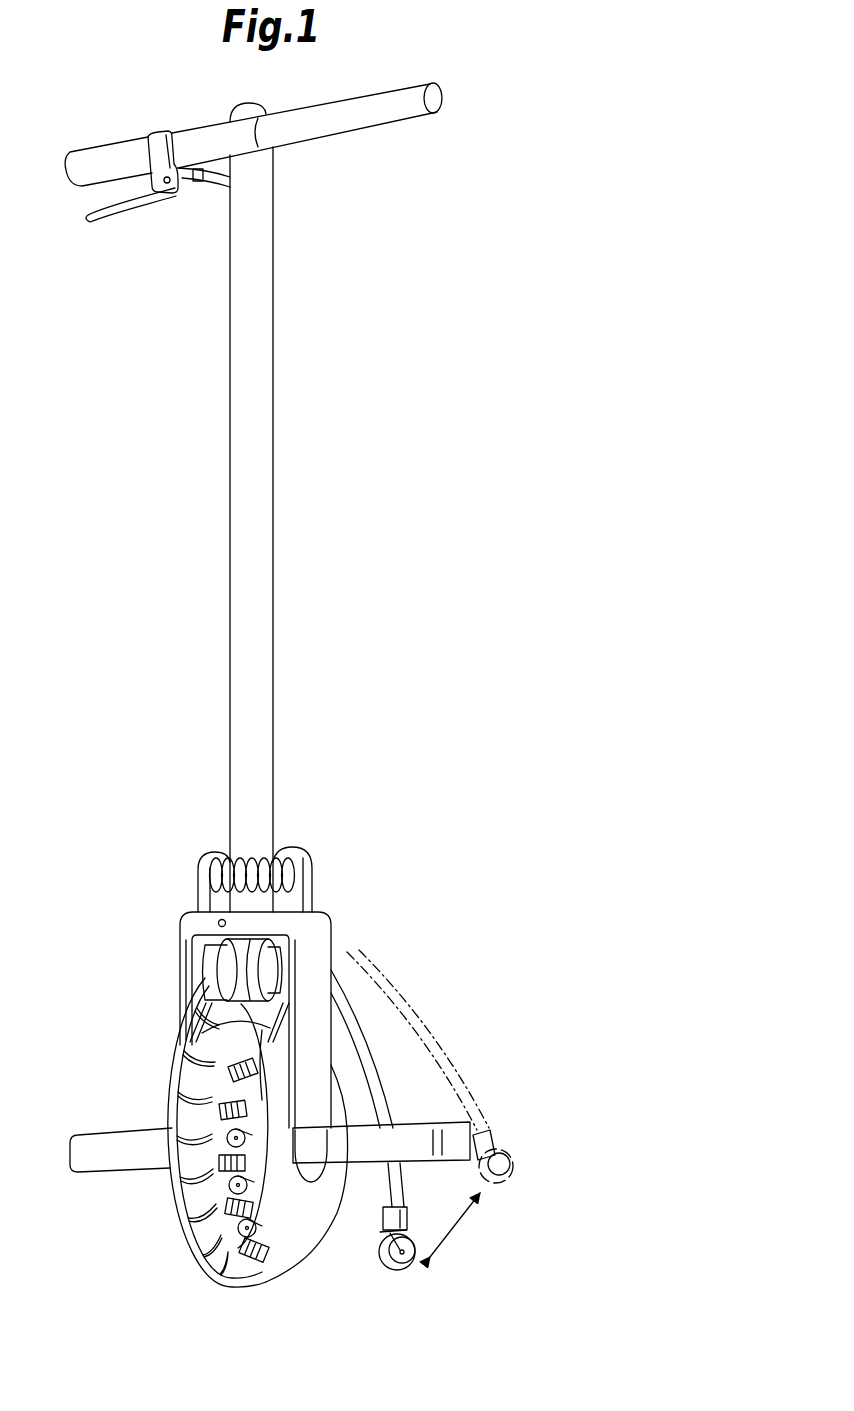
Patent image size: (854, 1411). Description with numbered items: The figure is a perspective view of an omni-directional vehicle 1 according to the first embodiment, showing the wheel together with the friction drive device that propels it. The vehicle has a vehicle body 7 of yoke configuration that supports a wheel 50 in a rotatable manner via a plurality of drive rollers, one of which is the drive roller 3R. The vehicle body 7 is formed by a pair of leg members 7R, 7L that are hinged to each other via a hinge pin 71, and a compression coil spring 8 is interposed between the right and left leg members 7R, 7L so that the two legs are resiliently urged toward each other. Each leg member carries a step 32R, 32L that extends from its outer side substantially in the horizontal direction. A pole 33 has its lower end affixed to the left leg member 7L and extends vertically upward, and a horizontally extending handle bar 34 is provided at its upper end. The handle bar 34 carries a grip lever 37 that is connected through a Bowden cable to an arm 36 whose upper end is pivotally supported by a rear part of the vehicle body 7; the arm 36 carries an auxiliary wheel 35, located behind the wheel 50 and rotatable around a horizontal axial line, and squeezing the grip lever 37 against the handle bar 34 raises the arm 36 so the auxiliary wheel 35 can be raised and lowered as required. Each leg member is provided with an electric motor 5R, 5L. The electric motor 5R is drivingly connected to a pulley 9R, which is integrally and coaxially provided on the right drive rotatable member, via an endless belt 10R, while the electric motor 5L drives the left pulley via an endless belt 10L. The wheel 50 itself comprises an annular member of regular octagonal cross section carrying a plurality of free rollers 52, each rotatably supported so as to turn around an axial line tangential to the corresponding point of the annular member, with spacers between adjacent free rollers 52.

The omni-directional vehicle 1 is at (426, 832).
The drive roller 3R is at (262, 1242).
The electric motor 5L is at (230, 967).
The electric motor 5R is at (252, 973).
The vehicle body 7 is at (325, 923).
The leg member 7L is at (180, 996).
The leg member 7R is at (316, 950).
The compression coil spring 8 is at (223, 867).
The pulley 9R is at (373, 1184).
The endless belt 10L is at (188, 1035).
The endless belt 10R is at (268, 1038).
The step 32L is at (100, 1143).
The step 32R is at (415, 1133).
The pole 33 is at (273, 577).
The handle bar 34 is at (352, 122).
The auxiliary wheel 35 is at (409, 1262).
The arm 36 is at (362, 1027).
The grip lever 37 is at (118, 205).
The wheel 50 is at (175, 1148).
The free roller 52 is at (198, 1218).
The hinge pin 71 is at (218, 912).